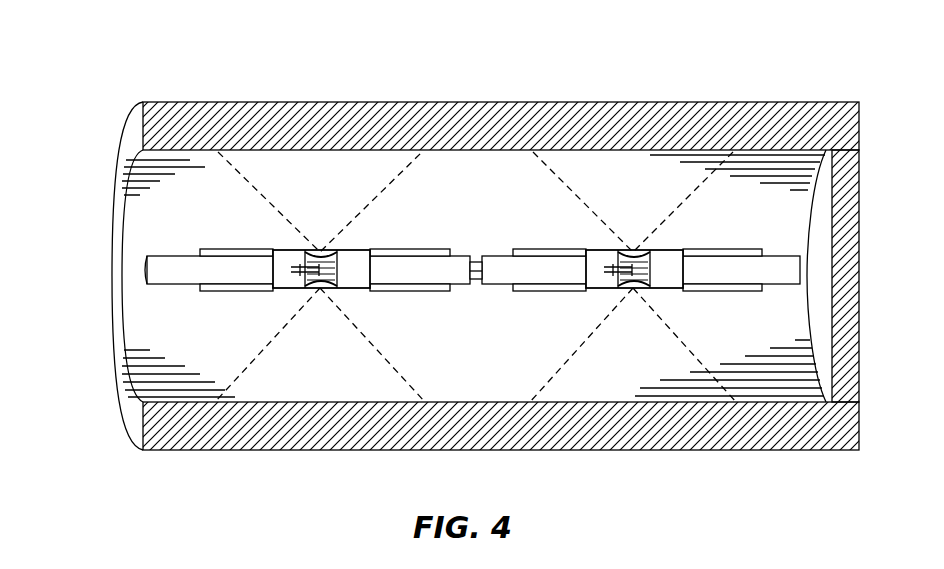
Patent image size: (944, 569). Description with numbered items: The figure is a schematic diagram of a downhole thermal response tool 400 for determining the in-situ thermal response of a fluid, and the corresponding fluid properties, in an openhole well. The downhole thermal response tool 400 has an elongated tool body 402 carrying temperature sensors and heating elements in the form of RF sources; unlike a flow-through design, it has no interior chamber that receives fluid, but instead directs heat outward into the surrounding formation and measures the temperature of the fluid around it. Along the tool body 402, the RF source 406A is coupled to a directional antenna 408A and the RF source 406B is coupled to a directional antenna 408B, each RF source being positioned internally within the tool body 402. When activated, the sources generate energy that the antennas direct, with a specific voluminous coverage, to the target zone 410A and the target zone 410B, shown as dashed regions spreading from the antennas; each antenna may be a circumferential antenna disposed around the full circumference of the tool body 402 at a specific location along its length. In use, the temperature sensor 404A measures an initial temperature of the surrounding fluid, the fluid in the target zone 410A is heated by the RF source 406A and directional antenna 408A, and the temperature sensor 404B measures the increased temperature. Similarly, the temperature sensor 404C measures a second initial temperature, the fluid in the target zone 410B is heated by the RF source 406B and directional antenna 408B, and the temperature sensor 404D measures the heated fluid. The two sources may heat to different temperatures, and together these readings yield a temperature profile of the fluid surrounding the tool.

The downhole thermal response tool 400 is at (124, 38).
The tool body 402 is at (767, 287).
The temperature sensor 404A is at (209, 248).
The temperature sensor 404B is at (417, 248).
The temperature sensor 404C is at (542, 249).
The temperature sensor 404D is at (702, 249).
The RF source 406A is at (292, 287).
The RF source 406B is at (602, 290).
The directional antenna 408A is at (319, 251).
The directional antenna 408B is at (632, 251).
The target zone 410A is at (310, 160).
The target zone 410B is at (670, 160).